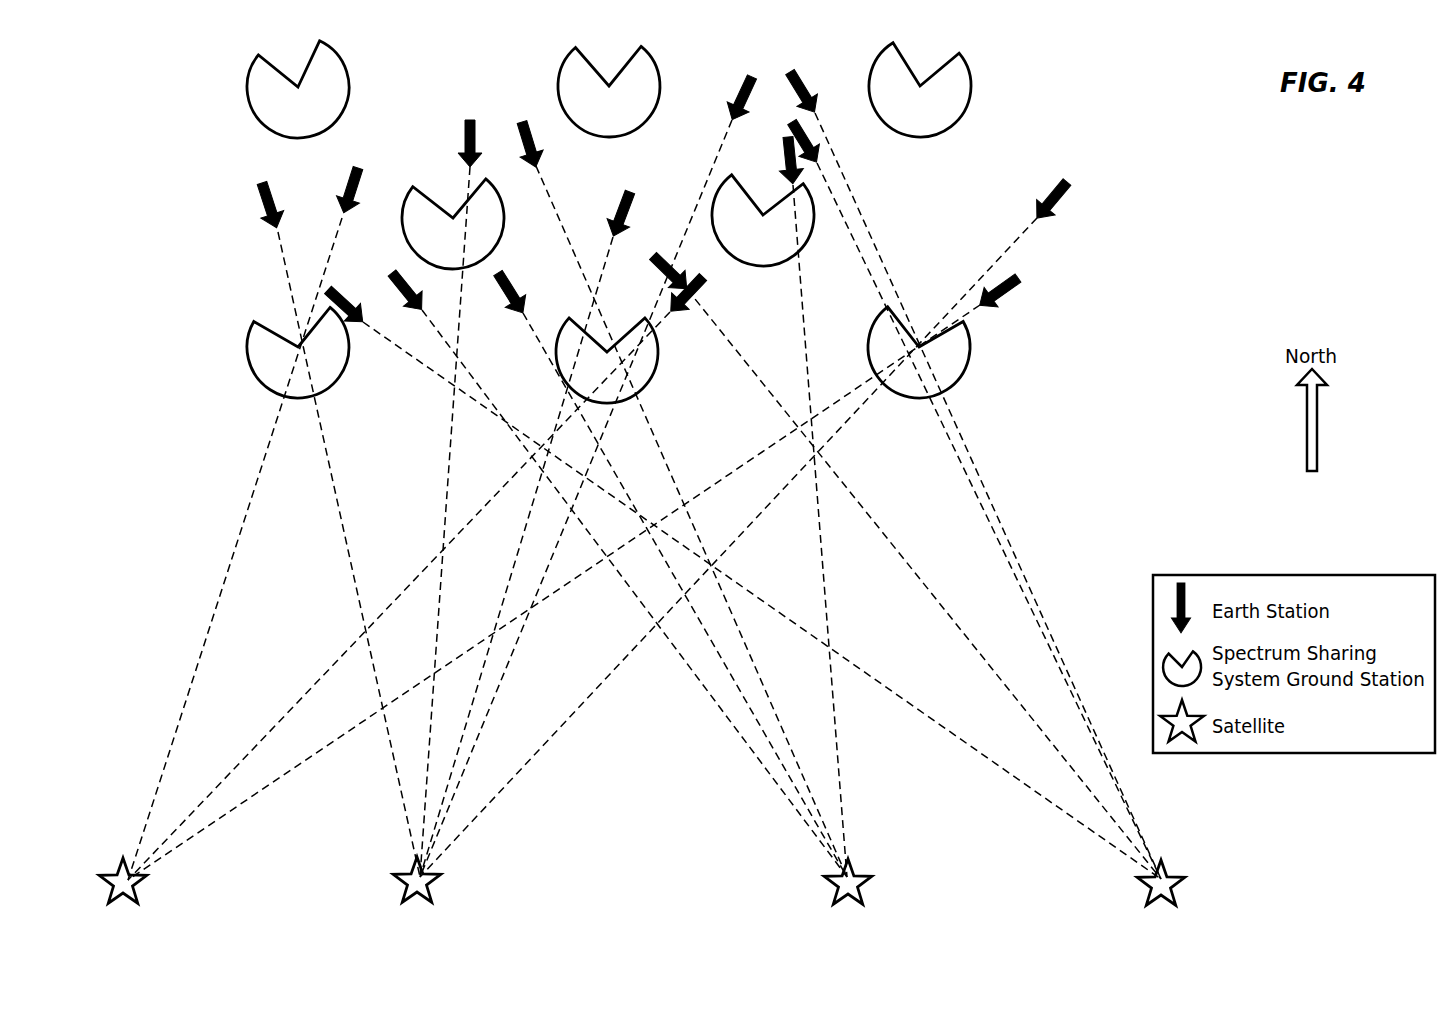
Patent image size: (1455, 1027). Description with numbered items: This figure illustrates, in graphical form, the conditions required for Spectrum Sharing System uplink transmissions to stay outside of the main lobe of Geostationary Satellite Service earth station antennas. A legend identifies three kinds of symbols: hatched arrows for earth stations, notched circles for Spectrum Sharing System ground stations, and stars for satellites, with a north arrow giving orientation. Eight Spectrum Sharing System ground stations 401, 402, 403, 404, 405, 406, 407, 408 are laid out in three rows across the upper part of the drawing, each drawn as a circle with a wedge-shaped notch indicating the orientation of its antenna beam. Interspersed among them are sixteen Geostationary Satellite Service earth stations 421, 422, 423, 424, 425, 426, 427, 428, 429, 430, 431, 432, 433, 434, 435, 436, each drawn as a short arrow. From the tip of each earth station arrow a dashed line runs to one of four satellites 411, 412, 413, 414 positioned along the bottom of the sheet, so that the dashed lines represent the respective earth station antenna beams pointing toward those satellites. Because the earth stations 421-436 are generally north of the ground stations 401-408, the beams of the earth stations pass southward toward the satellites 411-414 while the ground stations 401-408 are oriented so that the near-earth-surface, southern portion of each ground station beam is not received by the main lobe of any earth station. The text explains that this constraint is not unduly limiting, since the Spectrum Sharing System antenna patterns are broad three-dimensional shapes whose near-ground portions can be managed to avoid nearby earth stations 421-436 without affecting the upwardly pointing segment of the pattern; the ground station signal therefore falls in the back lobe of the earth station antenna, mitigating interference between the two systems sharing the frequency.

The Spectrum Sharing System ground station 401 is at (349, 72).
The Spectrum Sharing System ground station 402 is at (655, 68).
The Spectrum Sharing System ground station 403 is at (970, 88).
The Spectrum Sharing System ground station 404 is at (404, 229).
The Spectrum Sharing System ground station 405 is at (768, 266).
The Spectrum Sharing System ground station 406 is at (251, 357).
The Spectrum Sharing System ground station 407 is at (652, 374).
The Spectrum Sharing System ground station 408 is at (967, 358).
The satellite 411 is at (143, 888).
The satellite 412 is at (436, 886).
The satellite 413 is at (867, 890).
The satellite 414 is at (1183, 890).
The Geostationary Satellite Service earth station 421 is at (264, 192).
The Geostationary Satellite Service earth station 422 is at (350, 178).
The Geostationary Satellite Service earth station 423 is at (464, 137).
The Geostationary Satellite Service earth station 424 is at (549, 142).
The Geostationary Satellite Service earth station 425 is at (742, 99).
The Geostationary Satellite Service earth station 426 is at (804, 90).
The Geostationary Satellite Service earth station 427 is at (788, 160).
The Geostationary Satellite Service earth station 428 is at (810, 142).
The Geostationary Satellite Service earth station 429 is at (343, 296).
The Geostationary Satellite Service earth station 430 is at (401, 276).
The Geostationary Satellite Service earth station 431 is at (510, 277).
The Geostationary Satellite Service earth station 432 is at (622, 204).
The Geostationary Satellite Service earth station 433 is at (654, 254).
The Geostationary Satellite Service earth station 434 is at (703, 278).
The Geostationary Satellite Service earth station 435 is at (1068, 192).
The Geostationary Satellite Service earth station 436 is at (1016, 290).